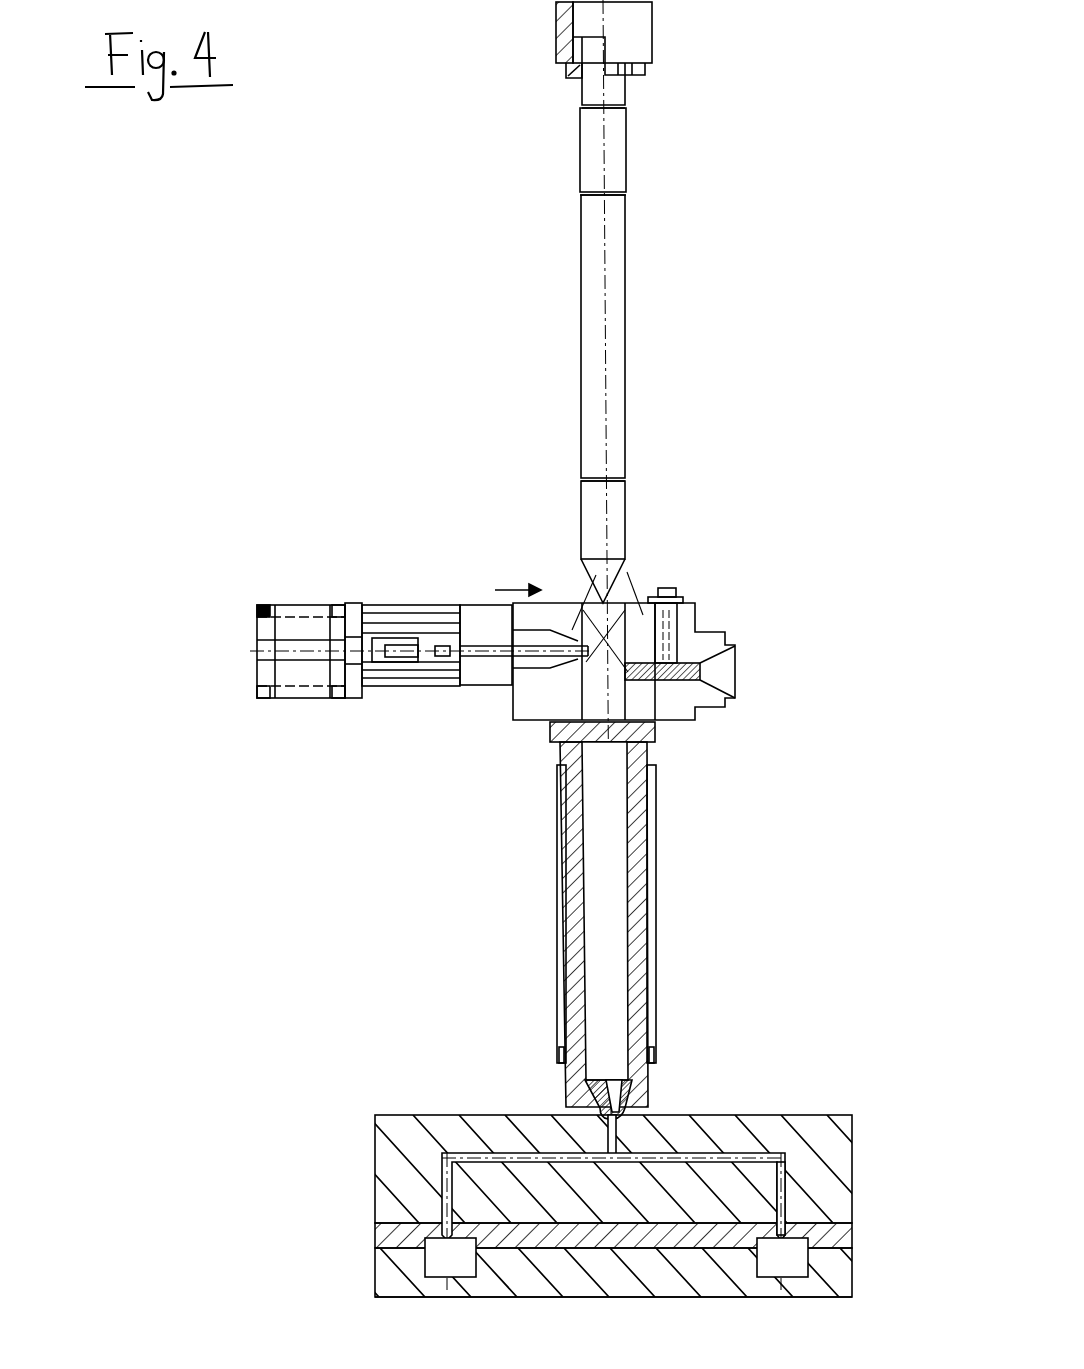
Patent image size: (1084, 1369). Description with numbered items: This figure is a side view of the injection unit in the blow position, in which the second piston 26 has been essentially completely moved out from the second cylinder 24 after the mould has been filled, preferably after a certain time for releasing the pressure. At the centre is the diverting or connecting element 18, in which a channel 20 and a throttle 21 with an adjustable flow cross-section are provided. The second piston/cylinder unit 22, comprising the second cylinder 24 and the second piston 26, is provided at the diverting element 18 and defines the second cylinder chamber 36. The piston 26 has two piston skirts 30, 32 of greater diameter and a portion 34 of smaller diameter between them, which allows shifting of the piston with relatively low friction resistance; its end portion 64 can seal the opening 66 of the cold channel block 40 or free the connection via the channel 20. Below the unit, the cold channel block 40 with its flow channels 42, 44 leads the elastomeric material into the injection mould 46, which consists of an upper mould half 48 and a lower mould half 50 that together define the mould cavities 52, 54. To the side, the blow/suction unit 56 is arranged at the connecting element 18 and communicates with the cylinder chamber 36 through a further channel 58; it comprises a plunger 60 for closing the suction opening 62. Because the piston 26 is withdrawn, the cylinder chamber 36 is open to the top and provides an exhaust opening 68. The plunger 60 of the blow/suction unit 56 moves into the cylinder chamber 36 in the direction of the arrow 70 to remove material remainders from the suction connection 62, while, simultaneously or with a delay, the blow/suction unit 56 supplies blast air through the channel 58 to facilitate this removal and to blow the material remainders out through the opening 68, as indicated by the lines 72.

The diverting element 18 is at (688, 712).
The channel 20 is at (702, 668).
The throttle 21 is at (667, 625).
The second piston/cylinder unit 22 is at (567, 914).
The second cylinder 24 is at (640, 903).
The second piston 26 is at (618, 88).
The upper piston skirt 30 is at (614, 148).
The lower piston skirt 32 is at (612, 500).
The portion of smaller diameter 34 is at (618, 325).
The second cylinder chamber 36 is at (600, 985).
The cold channel block 40 is at (388, 1142).
The flow channel 42 is at (445, 1205).
The flow channel 44 is at (787, 1163).
The injection mould 46 is at (392, 1276).
The upper mould half 48 is at (843, 1232).
The lower mould half 50 is at (845, 1278).
The mould cavity 52 is at (458, 1262).
The mould cavity 54 is at (792, 1262).
The blow/suction unit 56 is at (318, 608).
The channel 58 is at (566, 622).
The plunger 60 is at (548, 655).
The suction opening 62 is at (586, 668).
The end portion 64 is at (607, 572).
The opening 66 is at (594, 1102).
The exhaust opening 68 is at (594, 603).
The arrow 70 is at (502, 592).
The lines 72 is at (672, 596).